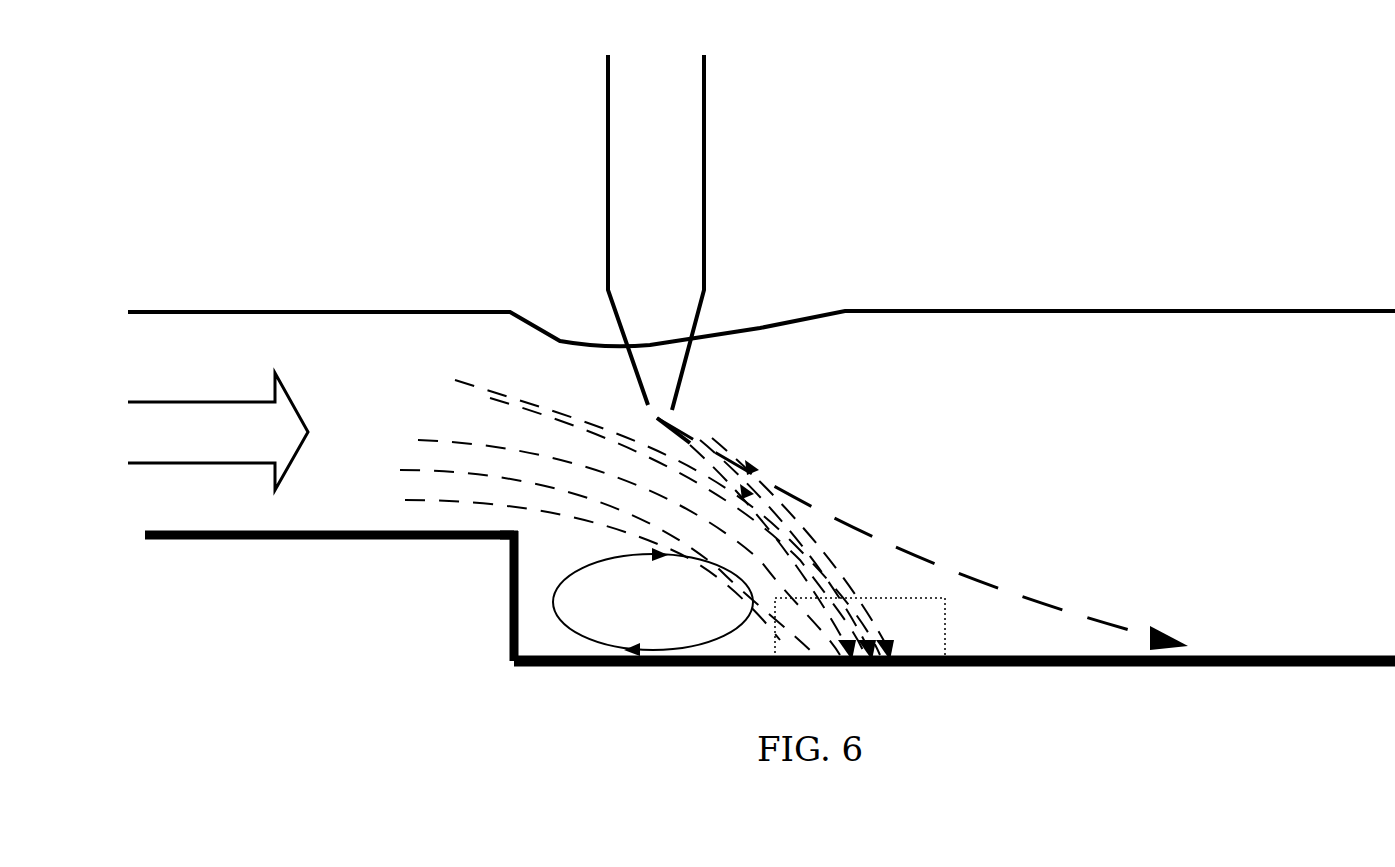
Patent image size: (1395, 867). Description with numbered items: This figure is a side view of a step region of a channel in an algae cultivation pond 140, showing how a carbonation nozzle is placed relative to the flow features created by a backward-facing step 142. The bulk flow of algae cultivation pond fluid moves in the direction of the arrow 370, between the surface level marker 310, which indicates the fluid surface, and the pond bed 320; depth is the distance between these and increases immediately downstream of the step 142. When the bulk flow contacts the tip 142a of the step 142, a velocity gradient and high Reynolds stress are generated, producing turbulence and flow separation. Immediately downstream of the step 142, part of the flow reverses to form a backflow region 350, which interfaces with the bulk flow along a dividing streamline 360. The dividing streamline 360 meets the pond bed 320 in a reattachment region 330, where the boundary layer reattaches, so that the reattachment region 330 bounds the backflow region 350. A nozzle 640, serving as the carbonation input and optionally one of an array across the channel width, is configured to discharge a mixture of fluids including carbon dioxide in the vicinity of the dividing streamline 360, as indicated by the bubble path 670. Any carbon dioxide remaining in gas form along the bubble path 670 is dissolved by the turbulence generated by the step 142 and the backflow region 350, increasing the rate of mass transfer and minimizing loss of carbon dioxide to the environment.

The pond 140 is at (294, 590).
The step 142 is at (509, 604).
The tip 142a is at (508, 540).
The surface level marker 310 is at (1338, 283).
The pond bed 320 is at (1310, 655).
The reattachment region 330 is at (945, 650).
The backflow region 350 is at (650, 605).
The dividing streamline 360 is at (460, 408).
The arrow 370 is at (240, 474).
The nozzle 640 is at (605, 148).
The bubble path 670 is at (675, 432).